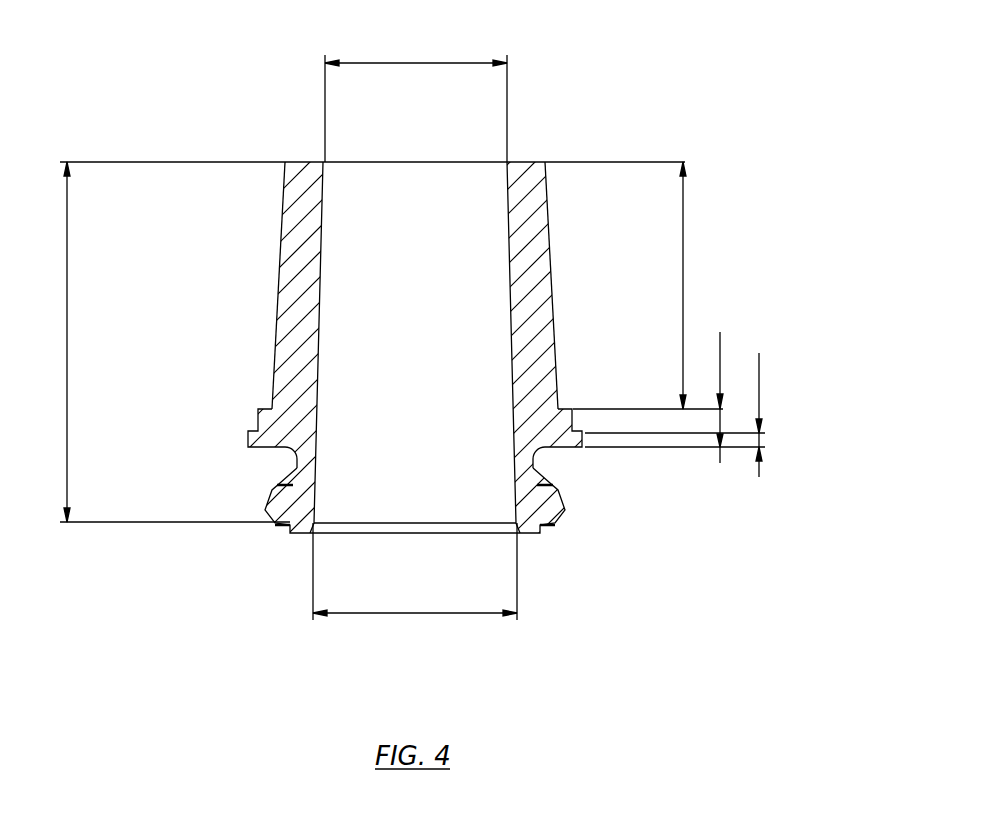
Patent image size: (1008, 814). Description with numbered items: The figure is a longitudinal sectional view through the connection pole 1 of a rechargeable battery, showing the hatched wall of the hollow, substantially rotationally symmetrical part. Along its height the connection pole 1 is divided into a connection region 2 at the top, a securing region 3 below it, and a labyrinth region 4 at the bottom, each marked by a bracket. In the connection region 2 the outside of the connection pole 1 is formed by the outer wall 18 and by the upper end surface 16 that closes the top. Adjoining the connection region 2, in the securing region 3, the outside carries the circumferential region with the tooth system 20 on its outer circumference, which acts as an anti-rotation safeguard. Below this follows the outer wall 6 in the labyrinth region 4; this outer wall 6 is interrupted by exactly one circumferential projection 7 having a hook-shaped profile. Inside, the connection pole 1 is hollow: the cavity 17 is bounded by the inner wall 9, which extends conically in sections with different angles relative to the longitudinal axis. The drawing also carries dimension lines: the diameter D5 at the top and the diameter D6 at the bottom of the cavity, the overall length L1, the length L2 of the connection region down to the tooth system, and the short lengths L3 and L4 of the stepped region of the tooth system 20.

The connection pole 1 is at (205, 136).
The connection region 2 is at (227, 162).
The securing region 3 is at (197, 412).
The labyrinth region 4 is at (260, 483).
The outer wall 6 is at (542, 467).
The circumferential projection 7 is at (563, 508).
The inner wall 9 is at (323, 310).
The upper end surface 16 is at (527, 162).
The cavity 17 is at (415, 445).
The outer wall 18 is at (551, 272).
The tooth system 20 is at (580, 447).
The length L1 is at (68, 378).
The length L2 is at (683, 283).
The length L3 is at (723, 352).
The length L4 is at (760, 386).
The diameter D5 is at (437, 63).
The diameter D6 is at (437, 613).